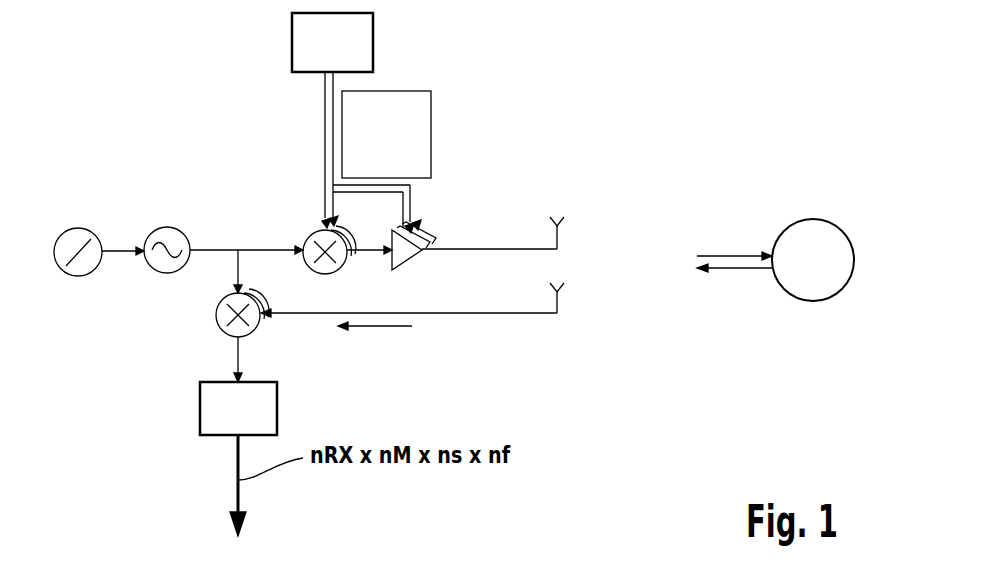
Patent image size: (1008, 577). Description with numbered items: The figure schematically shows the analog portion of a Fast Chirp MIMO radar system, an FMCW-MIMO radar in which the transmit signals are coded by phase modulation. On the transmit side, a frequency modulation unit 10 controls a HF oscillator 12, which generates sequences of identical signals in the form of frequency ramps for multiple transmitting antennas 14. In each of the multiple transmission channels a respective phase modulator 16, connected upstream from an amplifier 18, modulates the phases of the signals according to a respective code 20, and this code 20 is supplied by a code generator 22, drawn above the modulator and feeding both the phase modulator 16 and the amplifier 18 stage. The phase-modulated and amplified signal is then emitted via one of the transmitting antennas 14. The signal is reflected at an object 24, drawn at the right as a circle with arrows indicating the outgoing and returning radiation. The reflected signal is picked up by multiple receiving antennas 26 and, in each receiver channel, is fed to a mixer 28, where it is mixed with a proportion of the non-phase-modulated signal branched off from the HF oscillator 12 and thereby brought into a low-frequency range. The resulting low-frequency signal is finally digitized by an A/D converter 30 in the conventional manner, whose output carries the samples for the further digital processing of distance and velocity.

The frequency modulation unit 10 is at (94, 229).
The HF oscillator 12 is at (179, 227).
The transmitting antennas 14 is at (557, 228).
The phase modulator 16 is at (310, 232).
The amplifier 18 is at (414, 232).
The code 20 is at (432, 110).
The code generator 22 is at (375, 32).
The object 24 is at (832, 222).
The receiving antennas 26 is at (559, 297).
The mixer 28 is at (213, 313).
The A/D converter 30 is at (200, 400).